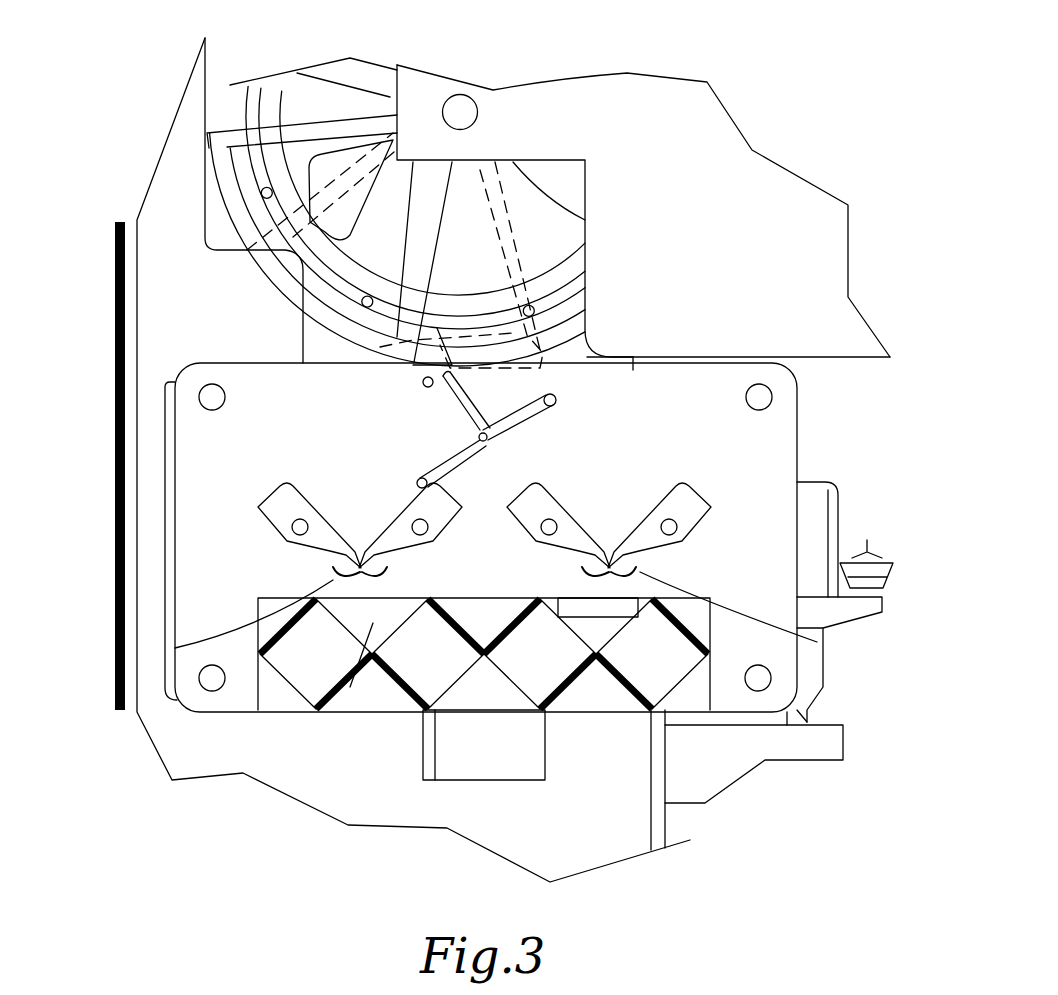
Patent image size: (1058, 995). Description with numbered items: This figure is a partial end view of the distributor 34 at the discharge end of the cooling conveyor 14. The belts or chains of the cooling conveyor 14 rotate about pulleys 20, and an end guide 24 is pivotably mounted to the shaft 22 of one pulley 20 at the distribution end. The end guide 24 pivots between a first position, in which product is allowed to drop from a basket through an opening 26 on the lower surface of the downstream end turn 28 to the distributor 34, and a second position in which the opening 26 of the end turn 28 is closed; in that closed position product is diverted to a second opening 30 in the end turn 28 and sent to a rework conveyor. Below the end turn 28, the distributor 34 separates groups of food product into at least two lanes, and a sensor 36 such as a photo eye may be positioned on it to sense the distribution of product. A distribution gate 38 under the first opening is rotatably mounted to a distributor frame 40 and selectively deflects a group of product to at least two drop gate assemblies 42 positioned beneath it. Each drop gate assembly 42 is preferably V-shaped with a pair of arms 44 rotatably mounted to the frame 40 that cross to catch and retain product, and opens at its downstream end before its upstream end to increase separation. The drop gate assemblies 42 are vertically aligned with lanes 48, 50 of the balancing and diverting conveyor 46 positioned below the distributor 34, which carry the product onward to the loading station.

The cooling conveyor 14 is at (703, 63).
The pulley 20 is at (266, 84).
The shaft 22 is at (461, 94).
The end guide 24 is at (257, 268).
The opening 26 is at (570, 395).
The downstream end turn 28 is at (665, 357).
The second opening 30 is at (620, 363).
The distributor 34 is at (157, 542).
The sensor 36 is at (428, 382).
The distribution gate 38 is at (550, 400).
The distributor frame 40 is at (200, 588).
The drop gate assemblies 42 is at (253, 505).
The arms 44 is at (367, 580).
The balancing and diverting conveyor 46 is at (287, 687).
The lane 48 is at (320, 705).
The lane 50 is at (600, 630).